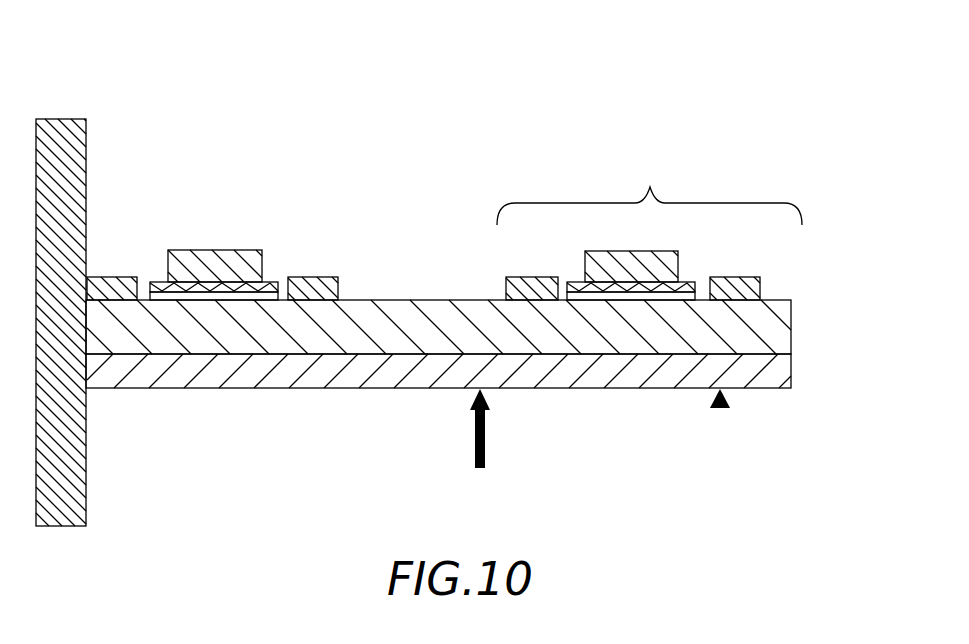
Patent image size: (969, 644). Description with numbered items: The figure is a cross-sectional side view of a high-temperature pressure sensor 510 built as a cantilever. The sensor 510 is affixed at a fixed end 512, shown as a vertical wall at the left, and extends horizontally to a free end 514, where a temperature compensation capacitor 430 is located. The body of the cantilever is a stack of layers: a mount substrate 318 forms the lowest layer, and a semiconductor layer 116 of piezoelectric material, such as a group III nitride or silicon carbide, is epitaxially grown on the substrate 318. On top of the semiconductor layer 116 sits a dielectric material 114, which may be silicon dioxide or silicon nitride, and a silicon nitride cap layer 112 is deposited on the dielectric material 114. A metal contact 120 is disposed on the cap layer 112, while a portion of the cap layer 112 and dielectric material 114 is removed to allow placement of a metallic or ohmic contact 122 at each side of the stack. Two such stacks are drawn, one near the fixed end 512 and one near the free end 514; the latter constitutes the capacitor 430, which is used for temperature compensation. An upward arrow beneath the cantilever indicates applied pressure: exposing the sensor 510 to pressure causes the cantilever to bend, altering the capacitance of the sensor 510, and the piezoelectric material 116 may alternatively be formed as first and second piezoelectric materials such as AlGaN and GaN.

The high-temperature pressure sensor 510 is at (200, 98).
The fixed end 512 is at (88, 474).
The free end 514 is at (720, 408).
The temperature compensation capacitor 430 is at (649, 193).
The metallic or ohmic contact 122 is at (112, 285).
The metal contact 120 is at (218, 252).
The silicon nitride cap layer 112 is at (273, 285).
The dielectric material 114 is at (285, 297).
The semiconductor layer 116 is at (791, 330).
The mount substrate 318 is at (780, 368).